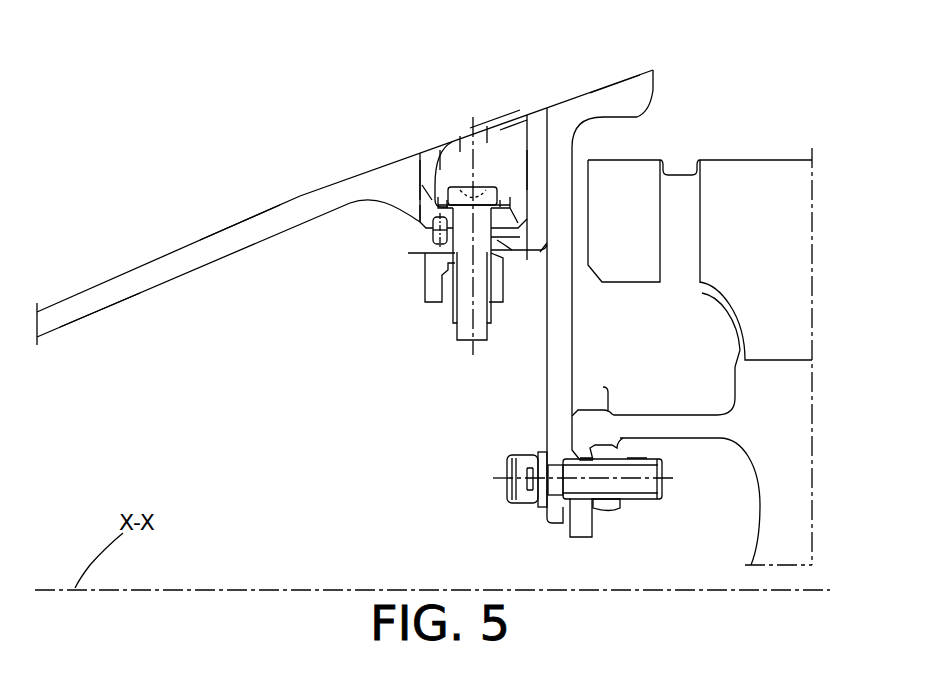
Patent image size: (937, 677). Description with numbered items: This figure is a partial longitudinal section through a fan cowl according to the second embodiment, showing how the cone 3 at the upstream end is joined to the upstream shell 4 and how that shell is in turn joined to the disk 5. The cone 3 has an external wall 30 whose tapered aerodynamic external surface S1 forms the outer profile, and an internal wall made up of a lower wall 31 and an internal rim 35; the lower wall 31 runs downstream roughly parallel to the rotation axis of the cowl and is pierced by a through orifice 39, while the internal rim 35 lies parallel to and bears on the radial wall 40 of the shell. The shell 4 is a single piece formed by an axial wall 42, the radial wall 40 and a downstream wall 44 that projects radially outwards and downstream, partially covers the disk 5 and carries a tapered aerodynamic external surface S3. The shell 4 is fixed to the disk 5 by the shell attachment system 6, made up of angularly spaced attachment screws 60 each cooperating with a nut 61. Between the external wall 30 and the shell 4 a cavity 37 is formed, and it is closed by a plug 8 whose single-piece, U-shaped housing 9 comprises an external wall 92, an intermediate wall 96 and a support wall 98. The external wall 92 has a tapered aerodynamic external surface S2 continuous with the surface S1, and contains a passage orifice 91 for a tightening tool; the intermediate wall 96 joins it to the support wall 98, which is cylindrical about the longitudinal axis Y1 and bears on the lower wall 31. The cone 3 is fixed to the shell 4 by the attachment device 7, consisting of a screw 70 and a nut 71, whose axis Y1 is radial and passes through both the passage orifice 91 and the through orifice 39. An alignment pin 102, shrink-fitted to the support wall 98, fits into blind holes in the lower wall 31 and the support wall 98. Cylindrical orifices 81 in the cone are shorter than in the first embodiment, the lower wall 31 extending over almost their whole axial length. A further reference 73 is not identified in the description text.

The cone 3 is at (173, 246).
The external wall 30 is at (108, 280).
The aerodynamic external surface S1 is at (238, 222).
The plug 8 is at (506, 109).
The aerodynamic external surface S2 is at (494, 125).
The orifice 81 is at (428, 149).
The housing 9 is at (430, 143).
The external wall 92 is at (448, 147).
The intermediate wall 96 is at (427, 193).
The cavity 37 is at (512, 155).
The aerodynamic external surface S3 is at (612, 84).
The passage orifice 91 is at (470, 130).
The longitudinal axis Y1 is at (473, 236).
The alignment pin 102 is at (432, 231).
The housing lower flange 73 is at (420, 212).
The attachment device 7 is at (415, 327).
The nut 71 is at (450, 293).
The screw 70 is at (467, 340).
The lower wall 31 is at (423, 255).
The through orifice 39 is at (500, 240).
The downstream wall 44 is at (656, 69).
The internal rim 35 is at (535, 168).
The support wall 98 is at (515, 218).
The axial wall 42 is at (530, 265).
The radial wall 40 is at (557, 398).
The upstream shell 4 is at (558, 515).
The disk 5 is at (777, 423).
The shell attachment system 6 is at (583, 521).
The attachment screw 60 is at (653, 487).
The nut 61 is at (613, 511).